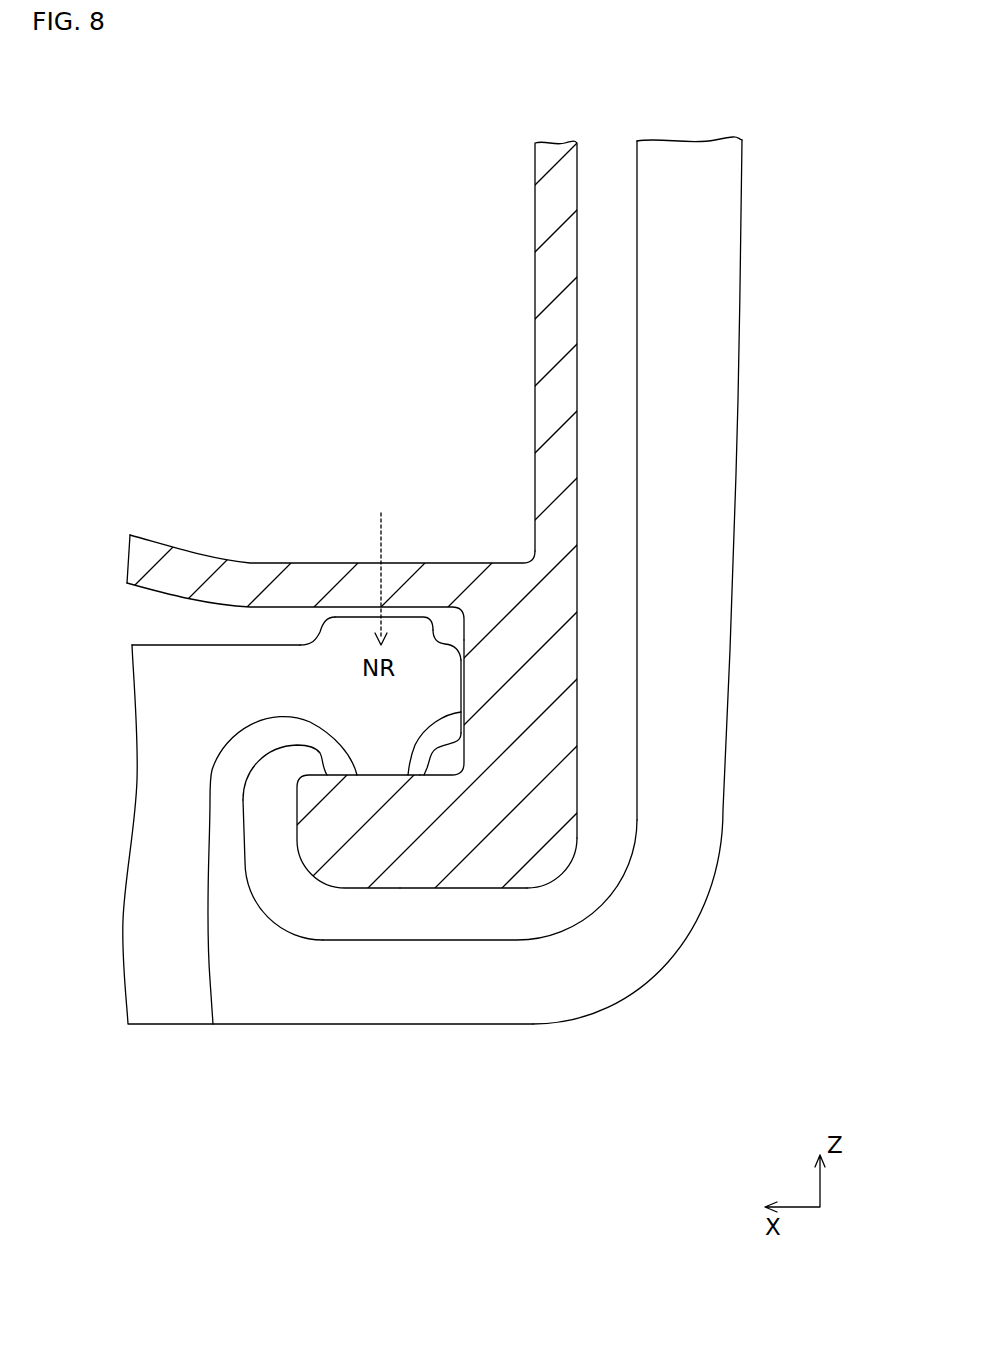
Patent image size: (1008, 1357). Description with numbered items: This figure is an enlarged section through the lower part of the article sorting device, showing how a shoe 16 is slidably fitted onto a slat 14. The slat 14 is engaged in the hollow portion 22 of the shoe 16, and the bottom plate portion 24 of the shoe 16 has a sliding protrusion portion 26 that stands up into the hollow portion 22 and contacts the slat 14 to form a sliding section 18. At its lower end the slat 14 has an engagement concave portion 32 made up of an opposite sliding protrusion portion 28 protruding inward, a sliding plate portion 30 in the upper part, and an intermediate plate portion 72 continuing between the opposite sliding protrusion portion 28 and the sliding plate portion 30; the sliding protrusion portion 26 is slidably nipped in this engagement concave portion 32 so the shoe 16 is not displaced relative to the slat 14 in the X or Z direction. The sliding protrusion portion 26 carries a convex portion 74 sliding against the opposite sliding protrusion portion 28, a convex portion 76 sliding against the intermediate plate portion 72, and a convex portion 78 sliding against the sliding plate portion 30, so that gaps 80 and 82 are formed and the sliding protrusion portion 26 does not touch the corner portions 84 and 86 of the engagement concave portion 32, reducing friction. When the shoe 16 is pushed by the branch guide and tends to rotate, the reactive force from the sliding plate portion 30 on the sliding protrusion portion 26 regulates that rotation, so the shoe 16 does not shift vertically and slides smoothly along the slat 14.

The slat 14 is at (580, 306).
The shoe 16 is at (742, 327).
The sliding section 18 is at (213, 1024).
The hollow portion 22 is at (638, 335).
The bottom plate portion 24 is at (155, 1010).
The sliding protrusion portion 26 is at (412, 693).
The opposite sliding protrusion portion 28 is at (382, 848).
The sliding plate portion 30 is at (437, 580).
The engagement concave portion 32 is at (410, 773).
The intermediate plate portion 72 is at (482, 682).
The convex portion 74 is at (388, 773).
The convex portion 76 is at (453, 668).
The convex portion 78 is at (365, 617).
The gap 80 is at (452, 763).
The gap 82 is at (447, 630).
The corner portion 84 is at (457, 752).
The corner portion 86 is at (457, 616).